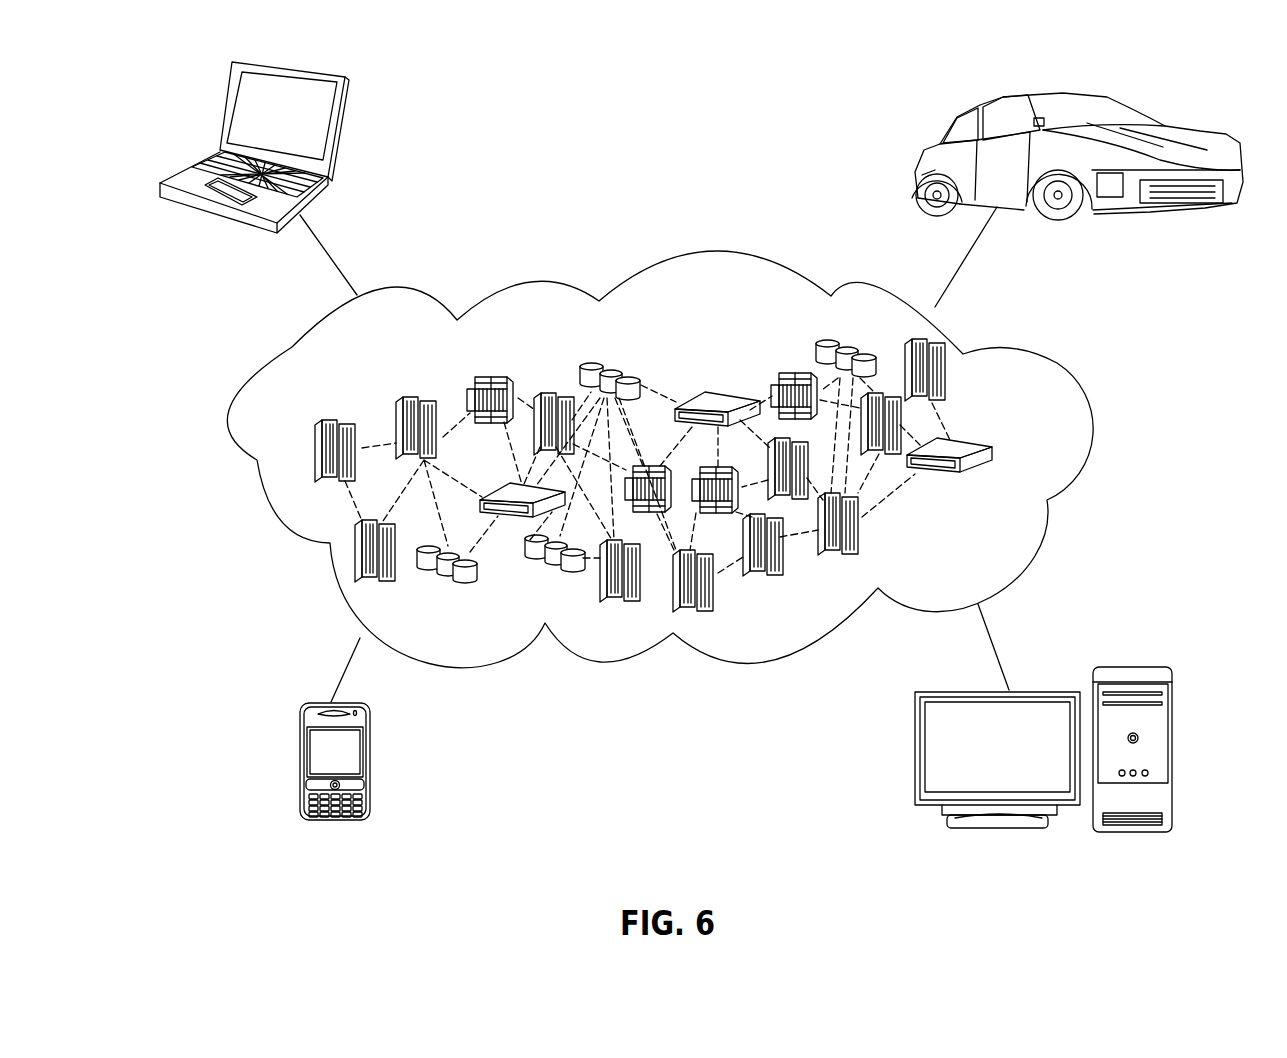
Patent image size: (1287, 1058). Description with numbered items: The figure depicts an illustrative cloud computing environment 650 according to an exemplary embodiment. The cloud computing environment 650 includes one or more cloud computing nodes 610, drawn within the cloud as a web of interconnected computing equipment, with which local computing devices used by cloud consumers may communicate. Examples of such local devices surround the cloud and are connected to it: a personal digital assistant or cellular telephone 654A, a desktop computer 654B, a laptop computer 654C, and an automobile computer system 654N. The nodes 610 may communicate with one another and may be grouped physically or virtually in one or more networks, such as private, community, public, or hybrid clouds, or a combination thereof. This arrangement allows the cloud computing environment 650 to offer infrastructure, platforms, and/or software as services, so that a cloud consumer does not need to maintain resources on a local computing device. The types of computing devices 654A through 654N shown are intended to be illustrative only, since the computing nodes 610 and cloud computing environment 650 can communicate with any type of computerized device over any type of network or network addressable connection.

The personal digital assistant (PDA) or cellular telephone 654A is at (296, 769).
The desktop computer 654B is at (1138, 667).
The laptop computer 654C is at (340, 128).
The automobile computer system 654N is at (927, 142).
The cloud computing environment 650 is at (1055, 367).
The cloud computing nodes 610 is at (1028, 453).